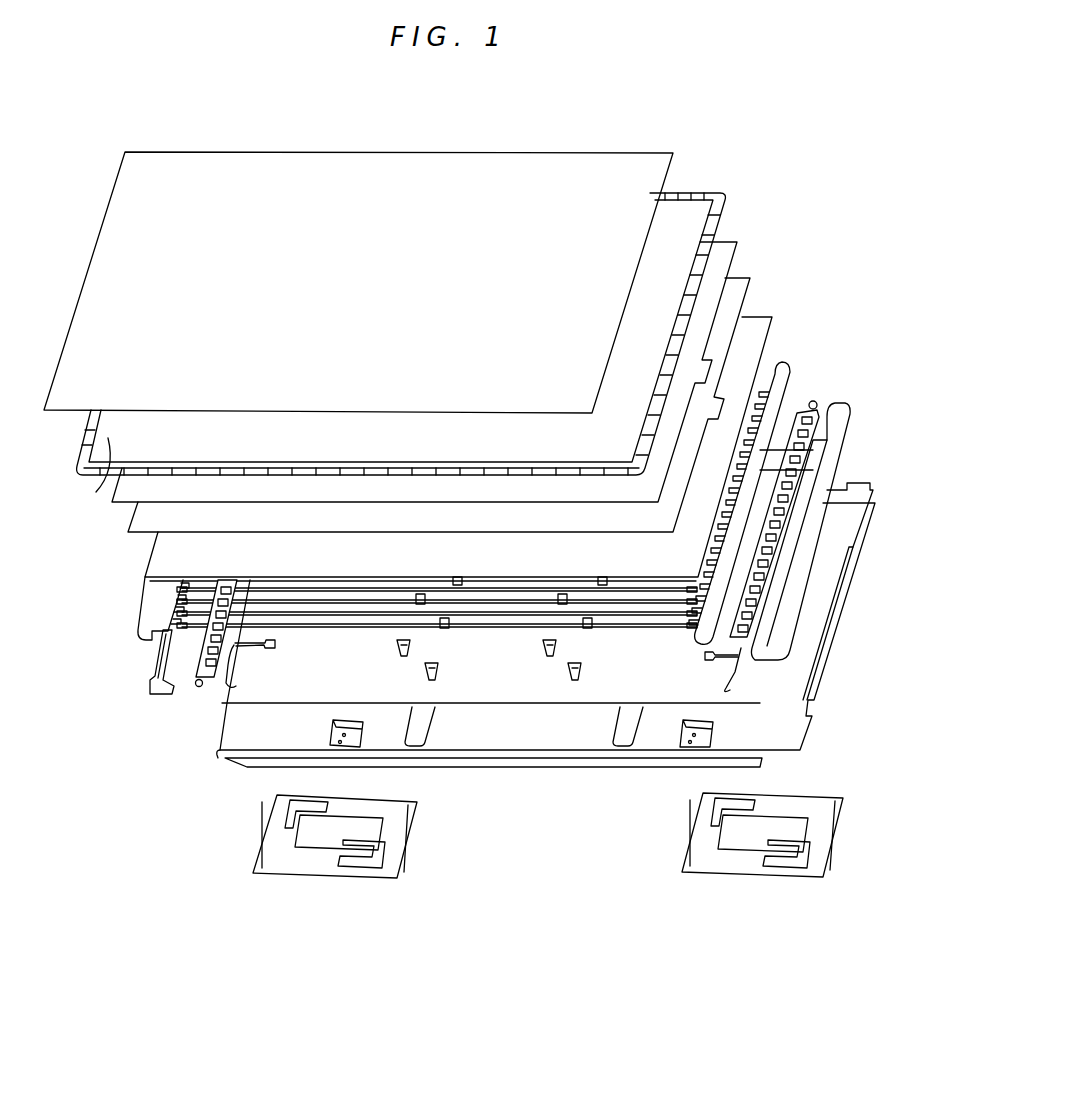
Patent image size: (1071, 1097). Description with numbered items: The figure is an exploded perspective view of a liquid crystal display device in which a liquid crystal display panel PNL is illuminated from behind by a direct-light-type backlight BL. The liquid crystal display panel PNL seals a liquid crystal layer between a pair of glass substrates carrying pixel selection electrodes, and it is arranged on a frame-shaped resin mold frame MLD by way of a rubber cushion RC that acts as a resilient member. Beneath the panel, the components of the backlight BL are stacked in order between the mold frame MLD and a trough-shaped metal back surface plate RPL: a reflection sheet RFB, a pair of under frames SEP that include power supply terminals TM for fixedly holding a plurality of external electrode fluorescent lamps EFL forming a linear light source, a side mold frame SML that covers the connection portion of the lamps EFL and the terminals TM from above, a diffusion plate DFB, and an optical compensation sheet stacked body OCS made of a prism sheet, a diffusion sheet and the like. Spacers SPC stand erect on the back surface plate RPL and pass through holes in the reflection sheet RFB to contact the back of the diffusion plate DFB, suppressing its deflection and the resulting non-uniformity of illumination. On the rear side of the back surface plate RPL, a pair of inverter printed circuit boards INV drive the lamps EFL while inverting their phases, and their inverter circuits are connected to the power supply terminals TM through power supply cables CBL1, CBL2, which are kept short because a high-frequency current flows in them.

The liquid crystal display panel PNL is at (672, 153).
The mold frame MLD is at (730, 202).
The rubber cushion RC is at (96, 492).
The optical compensation sheet stacked body OCS is at (743, 237).
The diffusion plate DFB is at (158, 552).
The under frame SEP is at (787, 360).
The external electrode fluorescent lamp EFL is at (287, 627).
The power supply terminal TM is at (197, 681).
The side mold frame SML is at (168, 675).
The back surface plate RPL is at (858, 487).
The backlight BL is at (900, 748).
The power supply cable CBL1 is at (223, 680).
The power supply cable CBL2 is at (733, 673).
The reflection sheet RFB is at (493, 690).
The spacer SPC is at (568, 680).
The inverter printed circuit board INV is at (303, 872).